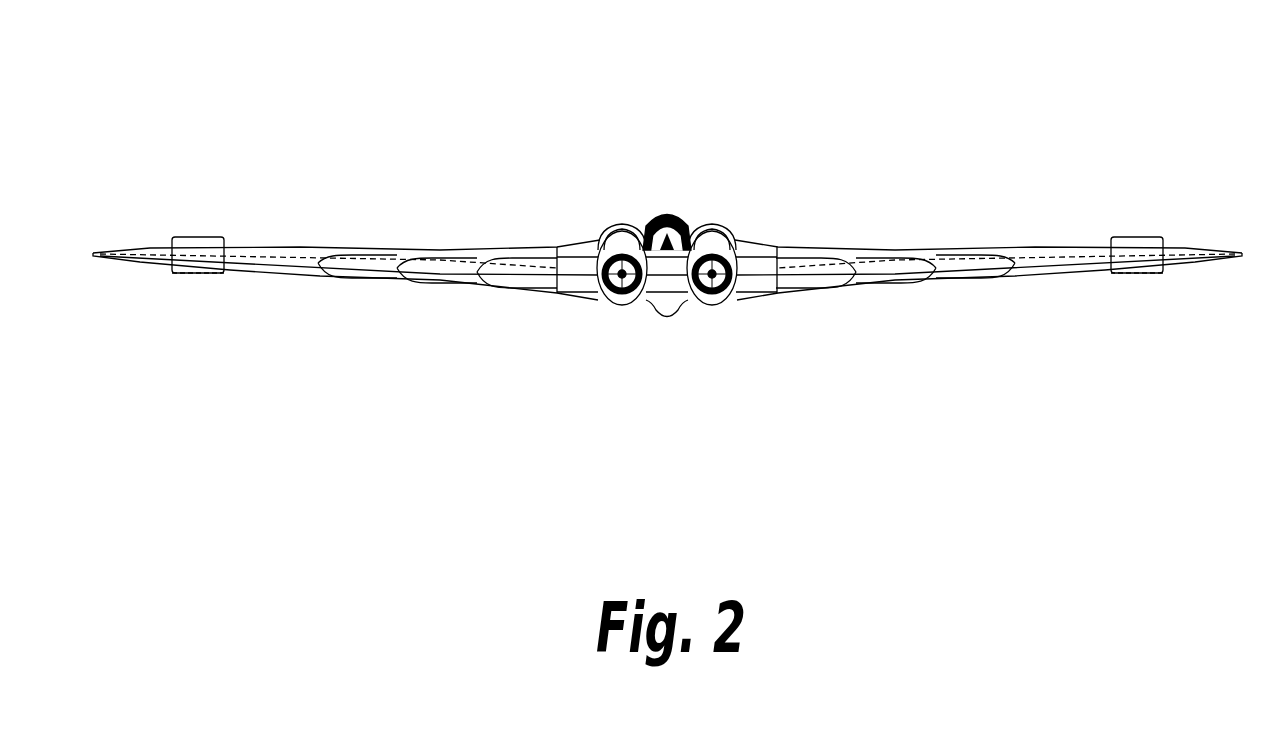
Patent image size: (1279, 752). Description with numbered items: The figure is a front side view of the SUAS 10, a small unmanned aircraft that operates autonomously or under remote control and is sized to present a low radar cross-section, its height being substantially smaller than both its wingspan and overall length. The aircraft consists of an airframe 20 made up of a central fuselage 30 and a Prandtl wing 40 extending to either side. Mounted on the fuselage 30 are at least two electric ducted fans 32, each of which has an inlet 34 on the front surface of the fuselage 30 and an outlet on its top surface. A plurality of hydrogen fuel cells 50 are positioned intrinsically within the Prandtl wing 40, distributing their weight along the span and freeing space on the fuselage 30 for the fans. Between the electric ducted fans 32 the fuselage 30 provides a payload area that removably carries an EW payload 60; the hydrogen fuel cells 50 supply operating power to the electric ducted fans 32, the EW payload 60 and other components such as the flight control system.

The SUAS 10 is at (1058, 120).
The airframe 20 is at (540, 200).
The fuselage 30 is at (775, 340).
The electric ducted fan 32 is at (620, 230).
The inlet 34 is at (606, 242).
The Prandtl wing 40 is at (548, 340).
The hydrogen fuel cell 50 is at (368, 266).
The EW payload 60 is at (668, 212).